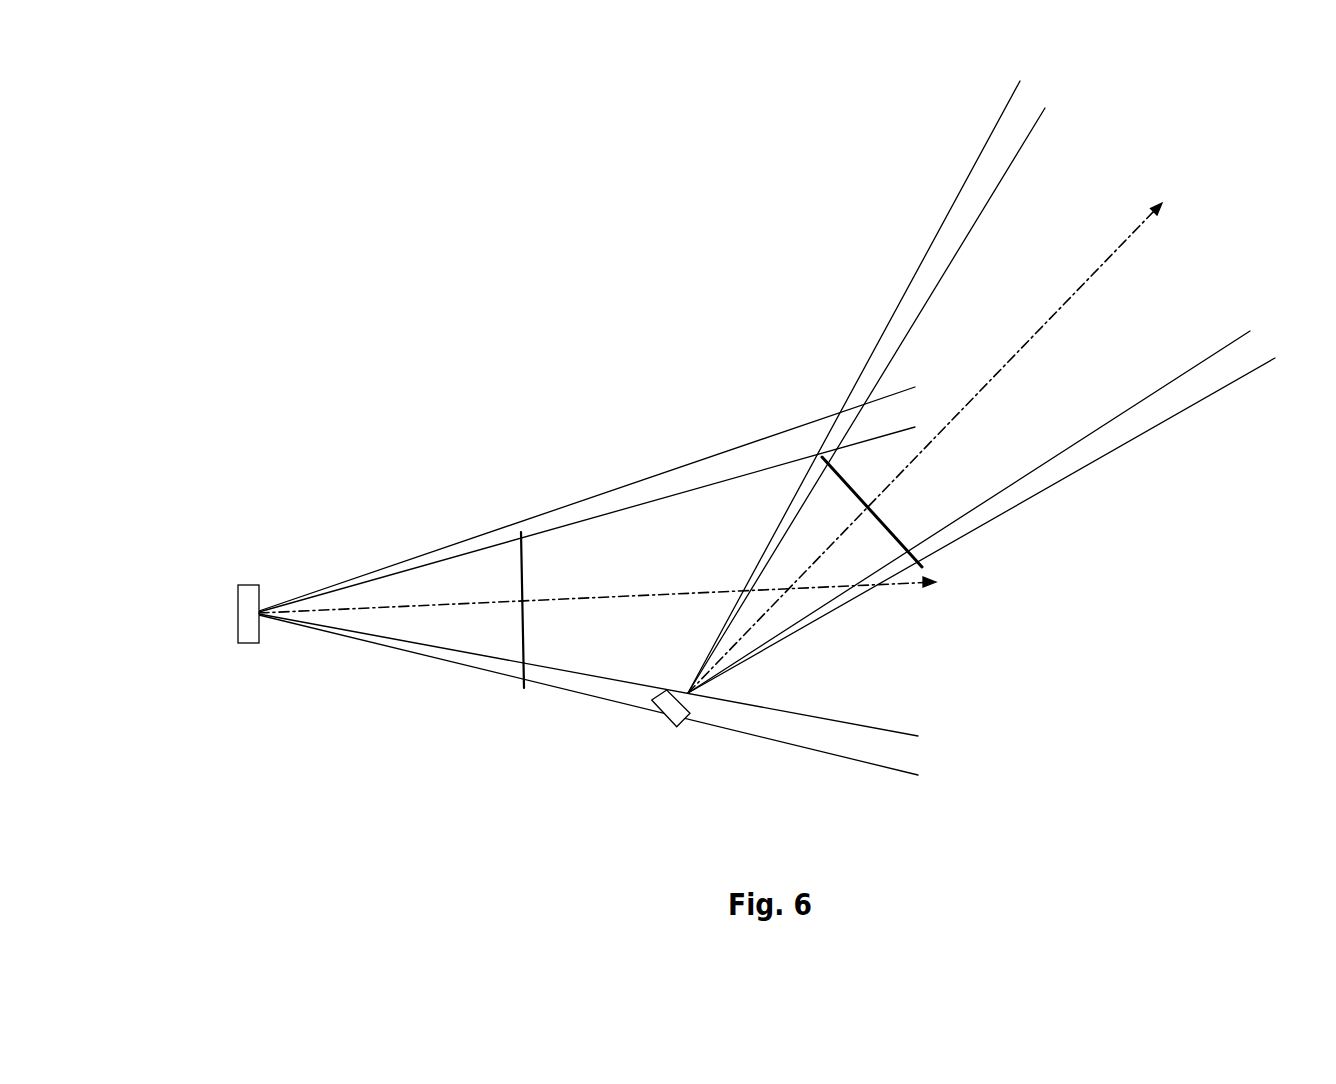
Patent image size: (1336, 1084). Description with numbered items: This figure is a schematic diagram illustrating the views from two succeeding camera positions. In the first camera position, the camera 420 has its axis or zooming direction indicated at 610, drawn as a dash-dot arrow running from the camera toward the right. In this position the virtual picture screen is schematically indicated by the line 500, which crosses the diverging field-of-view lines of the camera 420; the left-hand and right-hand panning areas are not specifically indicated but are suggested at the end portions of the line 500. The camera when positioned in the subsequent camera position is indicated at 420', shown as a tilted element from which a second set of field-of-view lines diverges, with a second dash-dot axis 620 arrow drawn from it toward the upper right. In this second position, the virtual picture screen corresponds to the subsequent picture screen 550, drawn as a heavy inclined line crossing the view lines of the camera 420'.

The camera 420 is at (196, 614).
The camera in the subsequent camera position 420' is at (664, 742).
The virtual picture screen line 500 is at (526, 573).
The subsequent picture screen 550 is at (889, 532).
The axis or zooming direction of the camera in the first position 610 is at (682, 588).
The optical axis (reflected) 620 is at (1095, 271).